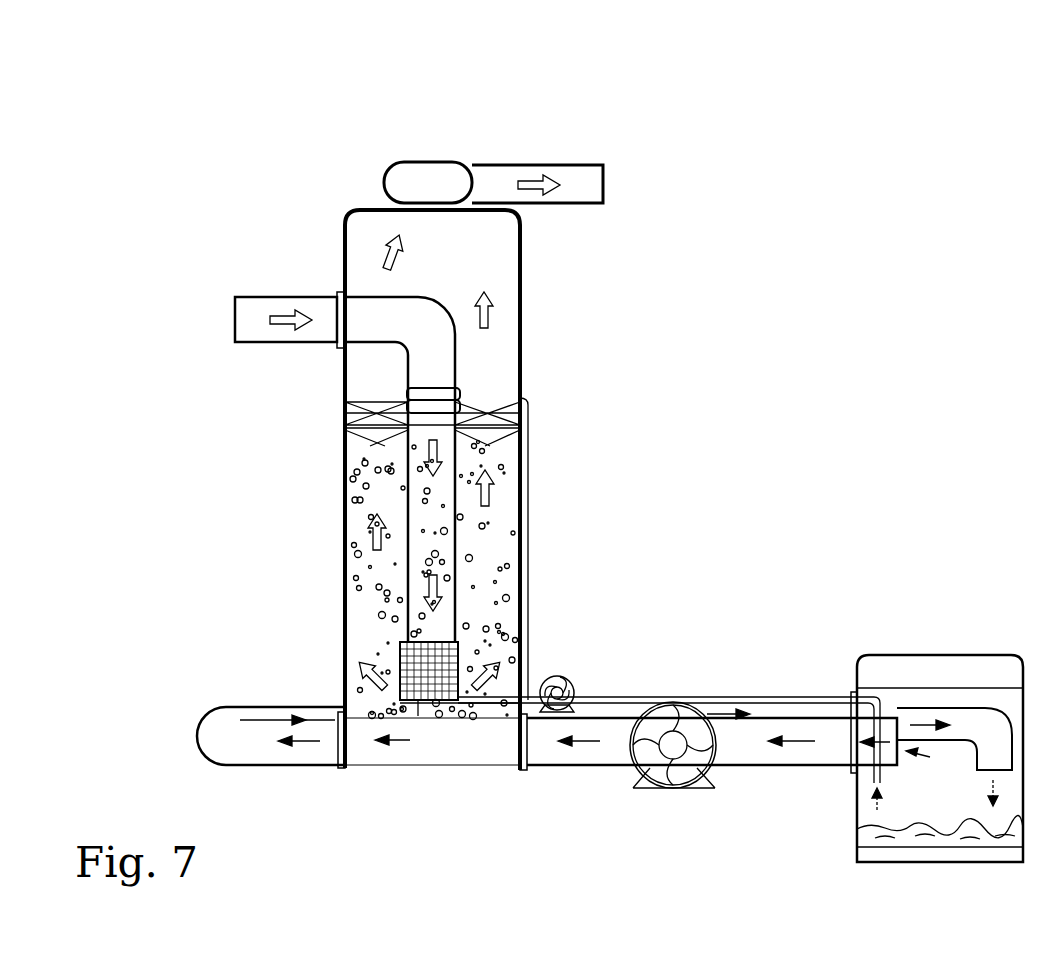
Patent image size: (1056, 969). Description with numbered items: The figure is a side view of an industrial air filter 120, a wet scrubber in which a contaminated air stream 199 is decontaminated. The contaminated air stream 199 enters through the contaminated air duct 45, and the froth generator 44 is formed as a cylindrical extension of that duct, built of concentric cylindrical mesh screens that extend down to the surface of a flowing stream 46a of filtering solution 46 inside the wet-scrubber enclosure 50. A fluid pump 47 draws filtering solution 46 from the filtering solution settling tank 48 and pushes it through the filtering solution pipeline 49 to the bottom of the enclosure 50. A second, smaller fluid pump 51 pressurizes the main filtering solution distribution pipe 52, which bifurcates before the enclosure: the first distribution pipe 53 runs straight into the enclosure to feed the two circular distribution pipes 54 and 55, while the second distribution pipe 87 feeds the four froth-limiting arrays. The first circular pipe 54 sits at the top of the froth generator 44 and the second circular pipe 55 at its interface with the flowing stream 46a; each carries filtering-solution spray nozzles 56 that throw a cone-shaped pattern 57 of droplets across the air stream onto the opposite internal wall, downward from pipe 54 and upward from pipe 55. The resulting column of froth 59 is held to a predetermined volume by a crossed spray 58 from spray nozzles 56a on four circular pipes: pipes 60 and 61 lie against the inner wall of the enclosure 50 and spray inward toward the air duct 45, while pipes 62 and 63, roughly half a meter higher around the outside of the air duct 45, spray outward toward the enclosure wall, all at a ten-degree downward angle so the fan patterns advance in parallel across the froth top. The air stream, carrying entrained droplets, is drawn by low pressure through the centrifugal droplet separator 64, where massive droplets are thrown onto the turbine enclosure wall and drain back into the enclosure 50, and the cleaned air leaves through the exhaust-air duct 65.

The industrial air filter 120 is at (535, 97).
The wet-scrubber enclosure 50 is at (343, 217).
The second distribution pipe 87 is at (528, 572).
The centrifugal droplet separator 64 is at (412, 183).
The exhaust-air duct 65 is at (600, 187).
The contaminated air duct 45 is at (248, 318).
The contaminated air stream 199 is at (292, 312).
The fourth filtering solution distribution pipe 63 is at (440, 383).
The third filtering solution distribution pipe 62 is at (480, 412).
The second filtering solution distribution pipe 61 is at (500, 404).
The first filtering solution distribution pipe 60 is at (500, 437).
The crossed spray 58 is at (355, 412).
The spray nozzles 56a is at (390, 402).
The column of froth 59 is at (378, 495).
The froth generator 44 is at (417, 636).
The first circular filtering solution distribution pipe 54 is at (420, 645).
The second circular filtering solution distribution pipe 55 is at (410, 695).
The cone-shaped spray pattern 57 is at (420, 718).
The filtering-solution spray nozzles 56 is at (453, 718).
The first distribution pipe 53 is at (480, 703).
The main filtering solution distribution pipe 52 is at (775, 697).
The second fluid pump 51 is at (570, 690).
The filtering solution pipeline 49 is at (197, 735).
The flowing stream of filtering solution 46a is at (382, 758).
The fluid pump 47 is at (673, 770).
The filtering solution settling tank 48 is at (940, 655).
The filtering solution 46 is at (857, 833).